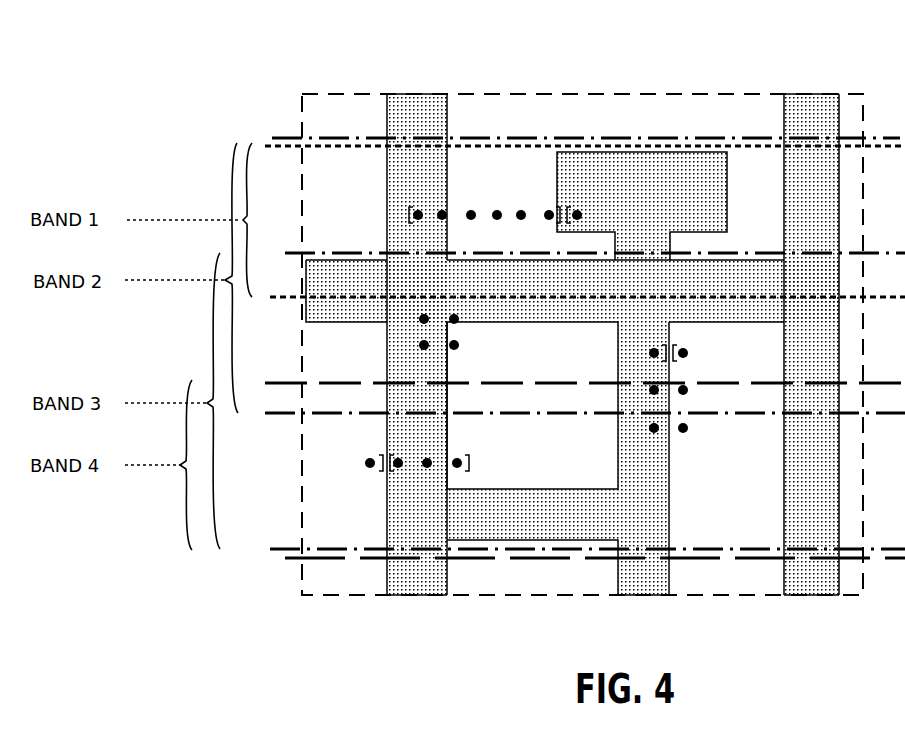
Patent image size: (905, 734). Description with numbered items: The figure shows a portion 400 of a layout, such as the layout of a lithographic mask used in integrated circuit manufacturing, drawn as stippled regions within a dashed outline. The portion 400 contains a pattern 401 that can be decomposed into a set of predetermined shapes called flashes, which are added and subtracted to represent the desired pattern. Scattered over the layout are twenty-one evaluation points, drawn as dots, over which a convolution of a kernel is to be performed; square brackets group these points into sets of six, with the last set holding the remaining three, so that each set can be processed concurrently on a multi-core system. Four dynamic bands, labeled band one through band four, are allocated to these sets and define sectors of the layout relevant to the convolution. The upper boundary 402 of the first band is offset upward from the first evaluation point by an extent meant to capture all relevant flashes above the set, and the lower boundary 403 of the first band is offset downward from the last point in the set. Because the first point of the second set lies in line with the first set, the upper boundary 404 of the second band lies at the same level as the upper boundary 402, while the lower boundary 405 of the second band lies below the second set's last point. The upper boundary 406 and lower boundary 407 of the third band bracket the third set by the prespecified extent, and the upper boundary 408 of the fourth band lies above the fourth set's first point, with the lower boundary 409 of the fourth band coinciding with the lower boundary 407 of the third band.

The portion of a layout 400 is at (490, 96).
The pattern 401 is at (671, 176).
The upper boundary of BAND 1 402 is at (278, 148).
The lower boundary of BAND 1 403 is at (270, 296).
The upper boundary of BAND 2 404 is at (272, 137).
The lower boundary of BAND 2 405 is at (277, 414).
The upper boundary of BAND 3 406 is at (285, 252).
The lower boundary of BAND 3 407 is at (278, 550).
The upper boundary of BAND 4 408 is at (290, 382).
The lower boundary of BAND 4 409 is at (303, 596).